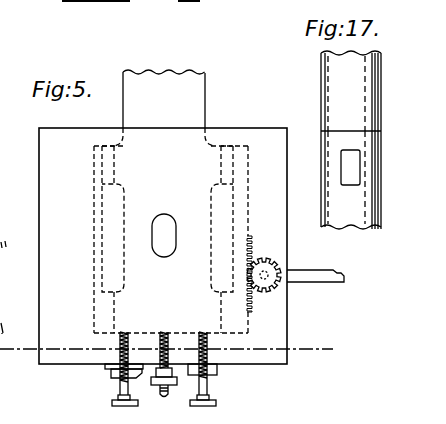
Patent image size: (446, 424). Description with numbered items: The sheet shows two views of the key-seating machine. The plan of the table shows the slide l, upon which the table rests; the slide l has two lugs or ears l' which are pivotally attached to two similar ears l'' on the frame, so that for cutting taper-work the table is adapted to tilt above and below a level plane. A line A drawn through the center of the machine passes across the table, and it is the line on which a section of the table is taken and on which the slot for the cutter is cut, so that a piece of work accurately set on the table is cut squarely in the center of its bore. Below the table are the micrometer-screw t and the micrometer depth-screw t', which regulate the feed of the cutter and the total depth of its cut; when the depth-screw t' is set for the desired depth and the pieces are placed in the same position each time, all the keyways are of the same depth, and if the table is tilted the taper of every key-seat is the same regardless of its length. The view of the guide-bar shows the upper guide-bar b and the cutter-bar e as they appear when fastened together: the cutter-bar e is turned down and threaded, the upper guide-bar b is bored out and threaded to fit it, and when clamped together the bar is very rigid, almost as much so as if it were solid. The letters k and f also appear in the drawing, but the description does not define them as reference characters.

In FIG. 5, the housing k is at (163, 246).
In FIG. 5, the slide l is at (171, 230).
In FIG. 5, the lugs or ears l' is at (173, 231).
In FIG. 5, the ears on the frame l'' is at (167, 157).
In FIG. 5, the micrometer-screw t is at (204, 369).
In FIG. 5, the micrometer depth-screw t' is at (120, 369).
In FIG. 5, the line A is at (174, 347).
In FIG. 17, the upper guide-bar b is at (341, 91).
In FIG. 17, the cutter-bar e is at (341, 180).
In FIG. 17, the window opening f is at (350, 167).